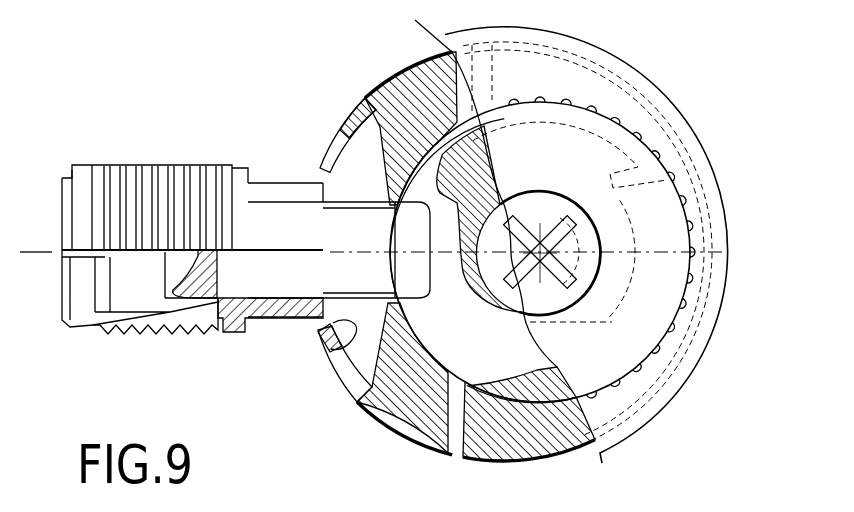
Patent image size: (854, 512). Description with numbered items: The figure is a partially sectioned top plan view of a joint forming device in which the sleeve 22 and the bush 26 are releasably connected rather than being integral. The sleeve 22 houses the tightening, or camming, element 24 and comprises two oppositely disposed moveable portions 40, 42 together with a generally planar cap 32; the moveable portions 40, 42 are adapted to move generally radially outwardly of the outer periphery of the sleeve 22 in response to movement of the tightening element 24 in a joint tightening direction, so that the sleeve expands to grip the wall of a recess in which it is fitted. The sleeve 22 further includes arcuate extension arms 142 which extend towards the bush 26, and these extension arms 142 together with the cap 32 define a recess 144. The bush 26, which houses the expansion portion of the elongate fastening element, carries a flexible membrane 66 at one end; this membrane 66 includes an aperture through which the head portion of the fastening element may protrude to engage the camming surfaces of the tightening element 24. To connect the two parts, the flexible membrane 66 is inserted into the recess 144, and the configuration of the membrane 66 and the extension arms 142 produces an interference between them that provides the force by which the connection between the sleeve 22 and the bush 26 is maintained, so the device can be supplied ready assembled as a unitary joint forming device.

The sleeve 22 is at (390, 66).
The tightening element 24 is at (466, 345).
The bush 26 is at (133, 158).
The cap 32 is at (683, 134).
The moveable portion 40 is at (547, 77).
The moveable portion 42 is at (507, 455).
The flexible membrane 66 is at (333, 350).
The extension arms 142 is at (340, 136).
The recess 144 is at (368, 140).